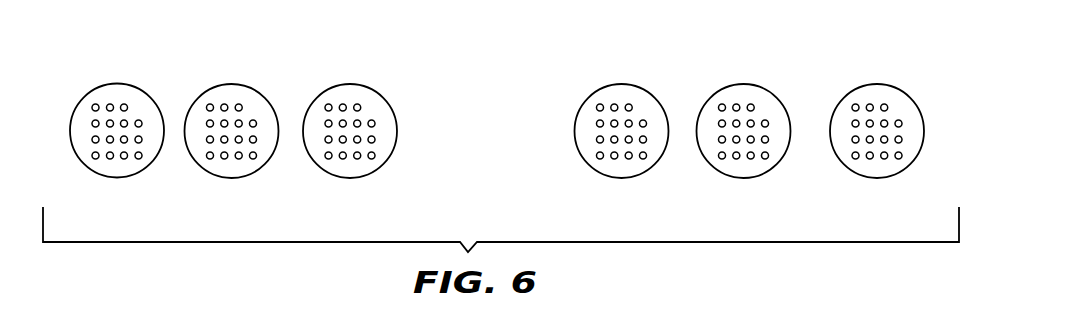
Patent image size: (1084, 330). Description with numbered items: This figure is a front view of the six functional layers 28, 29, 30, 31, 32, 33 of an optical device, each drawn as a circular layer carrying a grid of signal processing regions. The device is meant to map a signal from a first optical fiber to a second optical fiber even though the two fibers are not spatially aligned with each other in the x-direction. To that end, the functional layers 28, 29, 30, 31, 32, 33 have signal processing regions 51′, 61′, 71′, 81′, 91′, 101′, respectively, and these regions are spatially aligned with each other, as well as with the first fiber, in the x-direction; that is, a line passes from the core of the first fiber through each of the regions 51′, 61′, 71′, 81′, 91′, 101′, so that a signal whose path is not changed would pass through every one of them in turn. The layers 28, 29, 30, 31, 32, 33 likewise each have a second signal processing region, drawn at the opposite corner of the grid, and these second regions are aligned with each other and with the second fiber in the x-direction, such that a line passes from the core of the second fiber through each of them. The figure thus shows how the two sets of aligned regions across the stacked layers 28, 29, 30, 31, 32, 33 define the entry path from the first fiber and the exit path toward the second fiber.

The functional layer 28 is at (115, 84).
The functional layer 29 is at (230, 84).
The functional layer 30 is at (348, 84).
The functional layer 31 is at (620, 84).
The functional layer 32 is at (742, 84).
The functional layer 33 is at (875, 84).
The signal processing region 51′ is at (94, 104).
The signal processing region 61′ is at (209, 104).
The signal processing region 71′ is at (328, 104).
The signal processing region 81′ is at (599, 104).
The signal processing region 91′ is at (721, 104).
The signal processing region 101′ is at (854, 104).